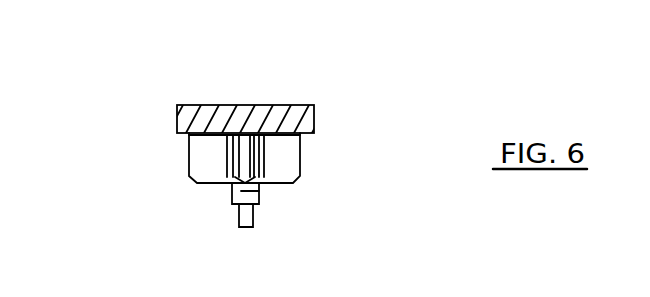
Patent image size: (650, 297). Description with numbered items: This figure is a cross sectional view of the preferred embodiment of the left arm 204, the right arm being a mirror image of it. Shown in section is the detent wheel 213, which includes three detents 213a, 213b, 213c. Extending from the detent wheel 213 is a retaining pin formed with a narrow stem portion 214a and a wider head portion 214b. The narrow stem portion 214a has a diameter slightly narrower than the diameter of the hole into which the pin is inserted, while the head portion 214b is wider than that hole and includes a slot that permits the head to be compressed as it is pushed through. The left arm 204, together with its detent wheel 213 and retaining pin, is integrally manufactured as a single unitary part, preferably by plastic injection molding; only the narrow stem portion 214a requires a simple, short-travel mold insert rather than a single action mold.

The left arm 204 is at (233, 120).
The detent wheel 213 is at (290, 153).
The detent 213a is at (233, 147).
The detent 213b is at (248, 160).
The detent 213c is at (259, 170).
The narrow stem portion 214a is at (248, 195).
The head portion 214b is at (247, 217).